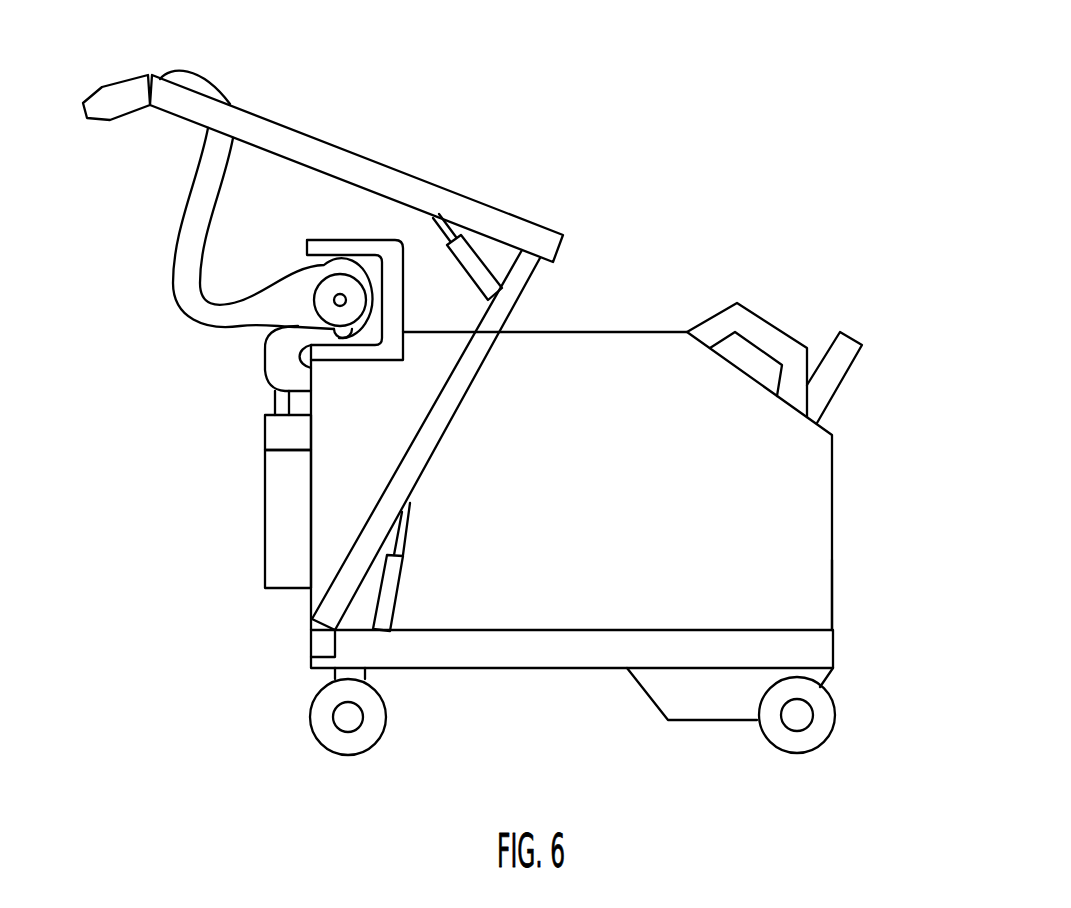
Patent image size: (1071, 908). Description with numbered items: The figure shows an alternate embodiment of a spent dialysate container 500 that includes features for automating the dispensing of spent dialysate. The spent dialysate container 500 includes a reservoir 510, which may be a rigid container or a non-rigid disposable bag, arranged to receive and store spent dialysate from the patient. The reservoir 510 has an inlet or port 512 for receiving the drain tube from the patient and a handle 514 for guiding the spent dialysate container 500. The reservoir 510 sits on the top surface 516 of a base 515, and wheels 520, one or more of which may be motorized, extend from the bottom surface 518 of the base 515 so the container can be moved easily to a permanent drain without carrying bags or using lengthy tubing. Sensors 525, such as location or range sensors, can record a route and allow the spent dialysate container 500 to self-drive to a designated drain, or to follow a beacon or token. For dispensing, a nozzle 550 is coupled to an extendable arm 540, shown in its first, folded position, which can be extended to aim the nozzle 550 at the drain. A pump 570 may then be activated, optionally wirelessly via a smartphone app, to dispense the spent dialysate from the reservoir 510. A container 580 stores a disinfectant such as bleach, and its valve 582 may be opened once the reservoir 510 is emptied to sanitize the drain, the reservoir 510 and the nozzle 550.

The spent dialysate container 500 is at (928, 142).
The reservoir 510 is at (608, 516).
The inlet or port 512 is at (852, 358).
The handle 514 is at (772, 333).
The base 515 is at (820, 650).
The top surface 516 is at (791, 623).
The bottom surface 518 is at (523, 669).
The wheels 520 is at (308, 718).
The sensors 525 is at (315, 643).
The extendable arm 540 is at (480, 215).
The nozzle 550 is at (79, 97).
The pump 570 is at (347, 283).
The container 580 is at (280, 518).
The valve 582 is at (265, 433).